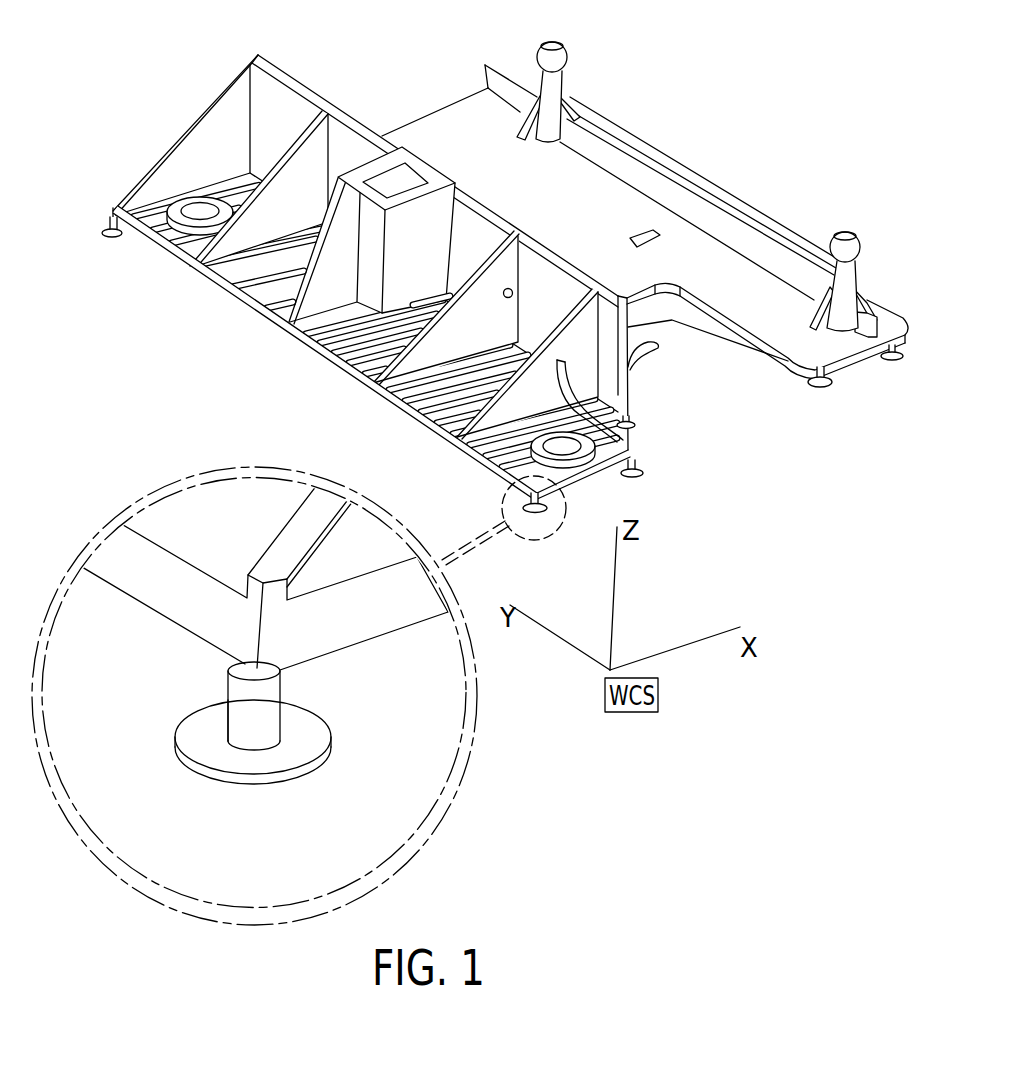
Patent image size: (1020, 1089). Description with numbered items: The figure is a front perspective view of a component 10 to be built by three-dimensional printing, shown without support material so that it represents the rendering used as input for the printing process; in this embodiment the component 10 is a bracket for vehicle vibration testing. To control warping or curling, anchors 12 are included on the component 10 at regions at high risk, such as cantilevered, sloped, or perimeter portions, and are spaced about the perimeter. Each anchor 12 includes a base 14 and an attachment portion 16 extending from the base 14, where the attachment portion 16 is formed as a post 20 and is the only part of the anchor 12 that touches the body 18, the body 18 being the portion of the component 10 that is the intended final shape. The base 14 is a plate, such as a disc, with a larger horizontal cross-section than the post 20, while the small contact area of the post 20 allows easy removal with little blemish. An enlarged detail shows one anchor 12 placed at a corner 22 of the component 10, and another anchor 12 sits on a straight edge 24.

The component 10 is at (404, 98).
The anchor 12 is at (840, 388).
The base 14 is at (217, 758).
The attachment portion 16 is at (253, 720).
The body 18 is at (700, 265).
The post 20 is at (267, 702).
The corner 22 is at (252, 632).
The straight edge 24 is at (253, 313).